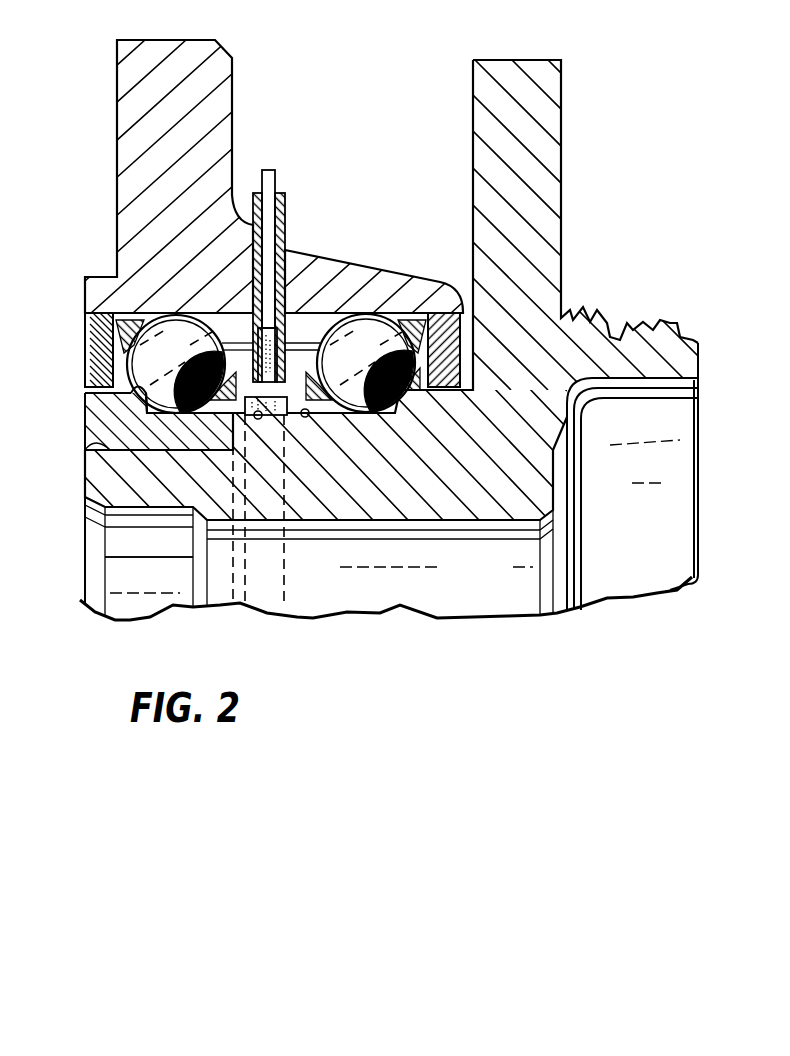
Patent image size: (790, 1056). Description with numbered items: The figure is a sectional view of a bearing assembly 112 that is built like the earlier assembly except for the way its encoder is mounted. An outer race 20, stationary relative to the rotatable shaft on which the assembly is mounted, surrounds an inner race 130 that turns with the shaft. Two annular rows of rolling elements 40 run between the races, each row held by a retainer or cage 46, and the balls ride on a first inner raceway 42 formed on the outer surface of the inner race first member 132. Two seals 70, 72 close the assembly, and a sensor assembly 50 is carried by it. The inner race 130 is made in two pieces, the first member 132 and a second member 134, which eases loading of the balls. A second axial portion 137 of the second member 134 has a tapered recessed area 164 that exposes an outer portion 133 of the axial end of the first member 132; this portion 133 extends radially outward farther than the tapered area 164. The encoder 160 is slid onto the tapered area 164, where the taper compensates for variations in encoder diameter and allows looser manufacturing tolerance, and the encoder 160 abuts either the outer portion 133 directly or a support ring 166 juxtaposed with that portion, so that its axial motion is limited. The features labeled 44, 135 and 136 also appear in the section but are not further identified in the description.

The bearing assembly 112 is at (377, 60).
The outer race 20 is at (186, 52).
The sensor assembly 50 is at (286, 201).
The rolling elements 40 is at (200, 350).
The first inner raceway 42 is at (133, 389).
The race element 44 is at (412, 378).
The retainer or cage 46 is at (122, 324).
The seal 70 is at (94, 333).
The seal 72 is at (450, 325).
The inner race 130 is at (432, 528).
The inner race first member 132 is at (100, 422).
The outer portion of the first member 133 is at (242, 414).
The second member of the inner race 134 is at (420, 497).
The groove 135 is at (84, 451).
The bore 136 is at (233, 440).
The second axial portion 137 is at (307, 416).
The encoder 160 is at (290, 604).
The tapered recessed area 164 is at (259, 418).
The support ring 166 is at (233, 574).